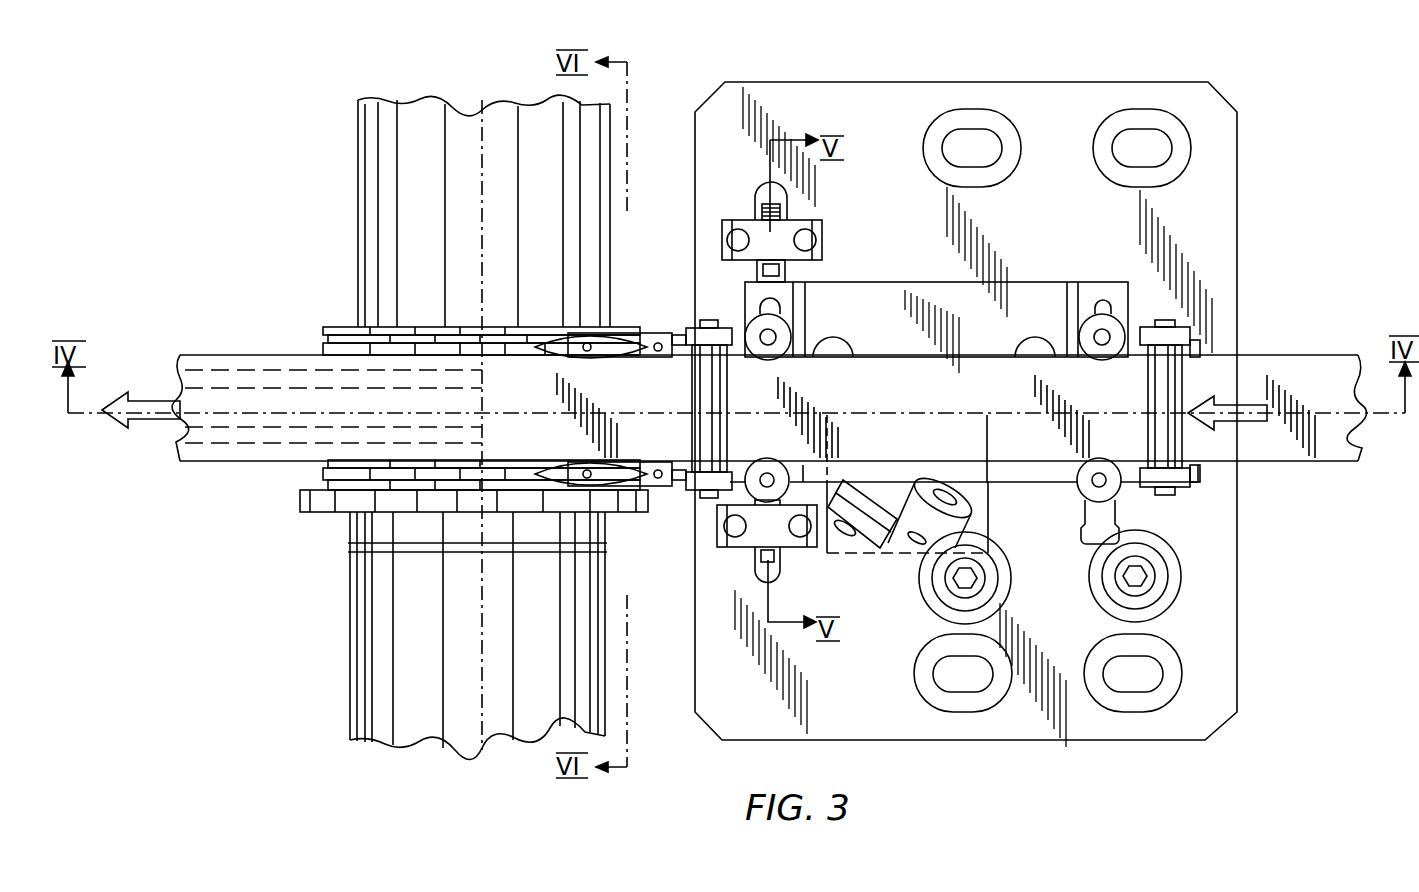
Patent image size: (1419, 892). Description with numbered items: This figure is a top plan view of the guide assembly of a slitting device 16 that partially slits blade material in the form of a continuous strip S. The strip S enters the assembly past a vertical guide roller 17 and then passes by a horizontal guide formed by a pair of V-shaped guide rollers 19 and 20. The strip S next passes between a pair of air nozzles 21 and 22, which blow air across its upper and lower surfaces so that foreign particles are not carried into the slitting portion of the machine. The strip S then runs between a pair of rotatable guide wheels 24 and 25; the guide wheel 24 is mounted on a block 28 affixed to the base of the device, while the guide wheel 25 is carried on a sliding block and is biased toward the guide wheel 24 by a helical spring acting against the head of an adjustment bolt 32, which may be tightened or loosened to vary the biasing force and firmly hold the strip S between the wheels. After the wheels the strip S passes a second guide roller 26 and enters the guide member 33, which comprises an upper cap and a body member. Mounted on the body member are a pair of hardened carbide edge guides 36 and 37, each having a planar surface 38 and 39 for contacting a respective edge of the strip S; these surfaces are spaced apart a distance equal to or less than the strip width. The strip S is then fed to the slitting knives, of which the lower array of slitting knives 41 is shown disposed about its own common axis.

The slitting device 16 is at (1238, 190).
The vertical guide roller 17 is at (1170, 382).
The V-shaped guide roller 19 is at (1103, 315).
The V-shaped guide roller 20 is at (1110, 488).
The air nozzle 21 is at (855, 495).
The air nozzle 22 is at (920, 505).
The rotatable guide wheel 24 is at (780, 323).
The rotatable guide wheel 25 is at (767, 460).
The guide roller 26 is at (695, 472).
The block 28 is at (745, 308).
The adjustment bolt 32 is at (760, 560).
The guide member 33 is at (668, 332).
The edge guide 36 is at (612, 345).
The edge guide 37 is at (615, 474).
The planar surface 38 is at (613, 356).
The planar surface 39 is at (575, 470).
The lower array of slitting knives 41 is at (455, 324).
The continuous strip S is at (1313, 357).